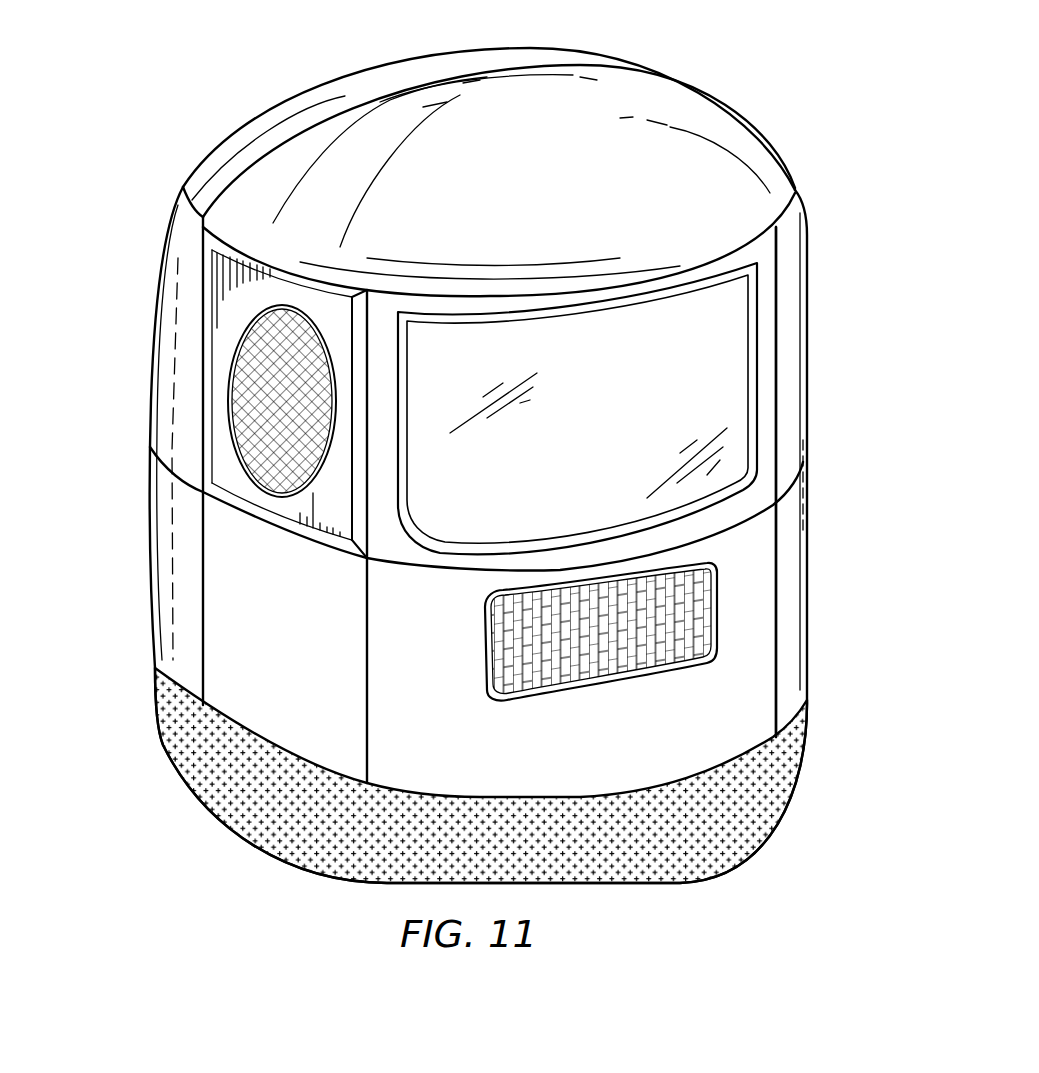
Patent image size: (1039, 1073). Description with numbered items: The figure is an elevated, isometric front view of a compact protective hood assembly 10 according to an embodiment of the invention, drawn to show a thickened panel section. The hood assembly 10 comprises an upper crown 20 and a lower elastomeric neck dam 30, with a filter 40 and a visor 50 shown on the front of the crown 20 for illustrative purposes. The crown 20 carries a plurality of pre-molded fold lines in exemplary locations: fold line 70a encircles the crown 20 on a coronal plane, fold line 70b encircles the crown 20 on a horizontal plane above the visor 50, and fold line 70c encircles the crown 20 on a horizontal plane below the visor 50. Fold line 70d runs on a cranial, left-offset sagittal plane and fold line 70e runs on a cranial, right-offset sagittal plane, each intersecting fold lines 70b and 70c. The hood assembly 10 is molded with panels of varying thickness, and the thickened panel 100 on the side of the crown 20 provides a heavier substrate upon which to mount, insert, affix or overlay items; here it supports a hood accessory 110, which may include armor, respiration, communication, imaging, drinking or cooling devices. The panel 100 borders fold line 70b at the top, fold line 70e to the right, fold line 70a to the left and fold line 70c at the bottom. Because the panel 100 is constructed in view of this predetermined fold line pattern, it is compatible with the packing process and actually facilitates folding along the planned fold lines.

The hood assembly 10 is at (216, 58).
The crown 20 is at (463, 50).
The neck dam 30 is at (240, 818).
The filter 40 is at (557, 680).
The visor 50 is at (604, 461).
The fold line 70a is at (640, 76).
The fold line 70b is at (796, 211).
The fold line 70c is at (796, 491).
The fold line 70d is at (776, 380).
The fold line 70e is at (365, 662).
The thickened panel 100 is at (227, 330).
The hood accessory 110 is at (233, 422).